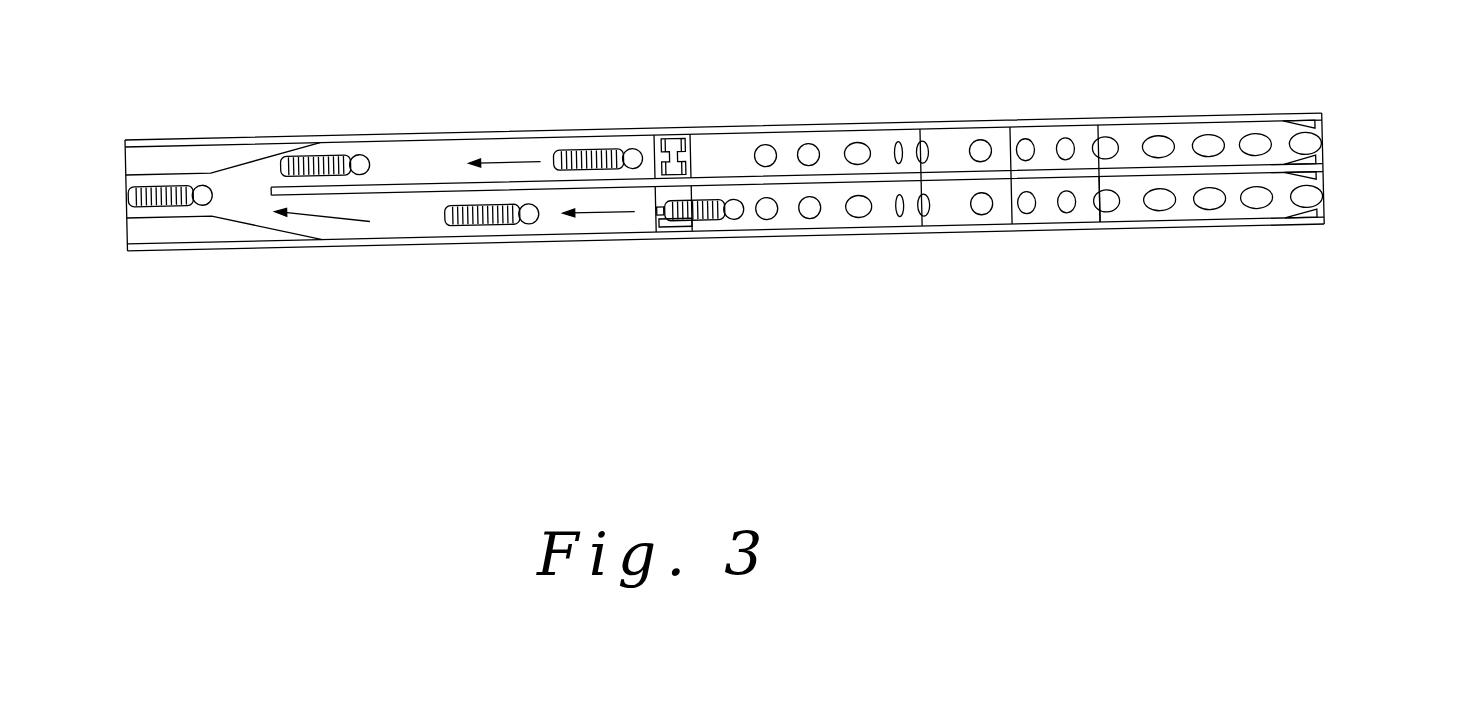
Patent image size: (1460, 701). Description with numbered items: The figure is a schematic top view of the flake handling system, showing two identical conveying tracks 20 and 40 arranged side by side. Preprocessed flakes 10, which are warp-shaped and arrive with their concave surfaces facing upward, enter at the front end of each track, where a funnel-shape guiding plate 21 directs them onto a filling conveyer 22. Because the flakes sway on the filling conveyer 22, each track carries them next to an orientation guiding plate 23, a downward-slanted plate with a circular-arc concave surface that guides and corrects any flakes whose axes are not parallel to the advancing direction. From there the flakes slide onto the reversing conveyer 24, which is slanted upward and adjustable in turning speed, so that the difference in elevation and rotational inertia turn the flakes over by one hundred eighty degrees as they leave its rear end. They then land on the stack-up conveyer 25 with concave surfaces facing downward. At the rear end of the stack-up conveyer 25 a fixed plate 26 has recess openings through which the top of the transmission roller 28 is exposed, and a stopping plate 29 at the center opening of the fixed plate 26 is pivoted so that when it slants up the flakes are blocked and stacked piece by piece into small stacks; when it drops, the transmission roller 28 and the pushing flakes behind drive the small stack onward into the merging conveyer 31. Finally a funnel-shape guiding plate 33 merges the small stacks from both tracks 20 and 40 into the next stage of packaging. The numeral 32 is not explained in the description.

The flakes 10 is at (1207, 147).
The conveying track 20 is at (960, 246).
The funnel-shape guiding plate 21 is at (1322, 152).
The filling conveyer 22 is at (1230, 212).
The orientation guiding plate 23 is at (1079, 213).
The reversing conveyer 24 is at (990, 215).
The stack-up conveyer 25 is at (828, 217).
The fixed plate 26 is at (647, 232).
The transmission roller 28 is at (670, 227).
The stopping plate 29 is at (653, 212).
The merging conveyer 31 is at (550, 222).
The bottom wall 32 is at (1268, 223).
The funnel-shape guiding plate 33 is at (237, 160).
The conveying track 40 is at (962, 104).